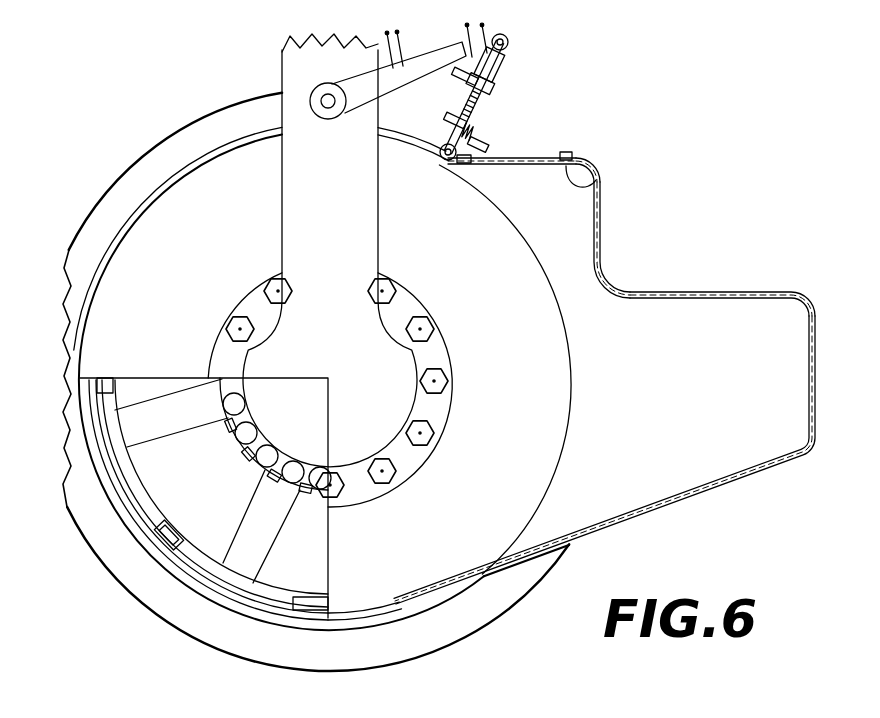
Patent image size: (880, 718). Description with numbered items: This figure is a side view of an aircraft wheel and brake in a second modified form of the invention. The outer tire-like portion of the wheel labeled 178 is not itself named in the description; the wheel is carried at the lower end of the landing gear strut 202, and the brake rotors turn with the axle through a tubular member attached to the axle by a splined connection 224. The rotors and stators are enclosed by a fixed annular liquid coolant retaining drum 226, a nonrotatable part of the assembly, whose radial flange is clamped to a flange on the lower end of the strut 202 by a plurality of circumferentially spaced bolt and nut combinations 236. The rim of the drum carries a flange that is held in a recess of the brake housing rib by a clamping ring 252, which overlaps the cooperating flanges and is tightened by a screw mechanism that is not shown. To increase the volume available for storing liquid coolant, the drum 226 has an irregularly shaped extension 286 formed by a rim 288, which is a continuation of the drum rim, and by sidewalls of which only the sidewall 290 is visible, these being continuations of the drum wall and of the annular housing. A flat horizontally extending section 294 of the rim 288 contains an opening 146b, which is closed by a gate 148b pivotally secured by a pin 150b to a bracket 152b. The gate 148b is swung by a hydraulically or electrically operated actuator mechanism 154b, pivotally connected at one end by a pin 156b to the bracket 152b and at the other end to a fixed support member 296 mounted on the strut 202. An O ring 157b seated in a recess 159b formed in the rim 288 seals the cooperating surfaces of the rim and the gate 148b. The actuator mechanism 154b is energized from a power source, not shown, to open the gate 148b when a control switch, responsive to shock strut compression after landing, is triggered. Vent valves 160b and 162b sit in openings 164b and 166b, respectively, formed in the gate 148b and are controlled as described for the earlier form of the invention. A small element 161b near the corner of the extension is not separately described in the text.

The tire 178 is at (162, 152).
The landing gear strut 202 is at (293, 187).
The splined connection 224 is at (253, 407).
The liquid coolant retaining drum 226 is at (394, 600).
The bolt and nut combinations 236 is at (432, 325).
The clamping ring 252 is at (432, 606).
The irregularly shaped extension 286 is at (700, 483).
The rim 288 is at (600, 233).
The sidewall 290 is at (717, 317).
The flat horizontally extending section 294 is at (580, 160).
The fixed support member 296 is at (312, 108).
The opening 146b is at (514, 166).
The gate 148b is at (490, 102).
The pin 150b is at (440, 154).
The bracket 152b is at (460, 146).
The actuator mechanism 154b is at (417, 66).
The pin 156b is at (507, 56).
The O ring 157b is at (512, 33).
The recess 159b is at (567, 152).
The vent valve 160b is at (496, 81).
The flexible boot 161b is at (594, 183).
The vent valve 162b is at (455, 123).
The opening 164b is at (470, 90).
The opening 166b is at (470, 103).